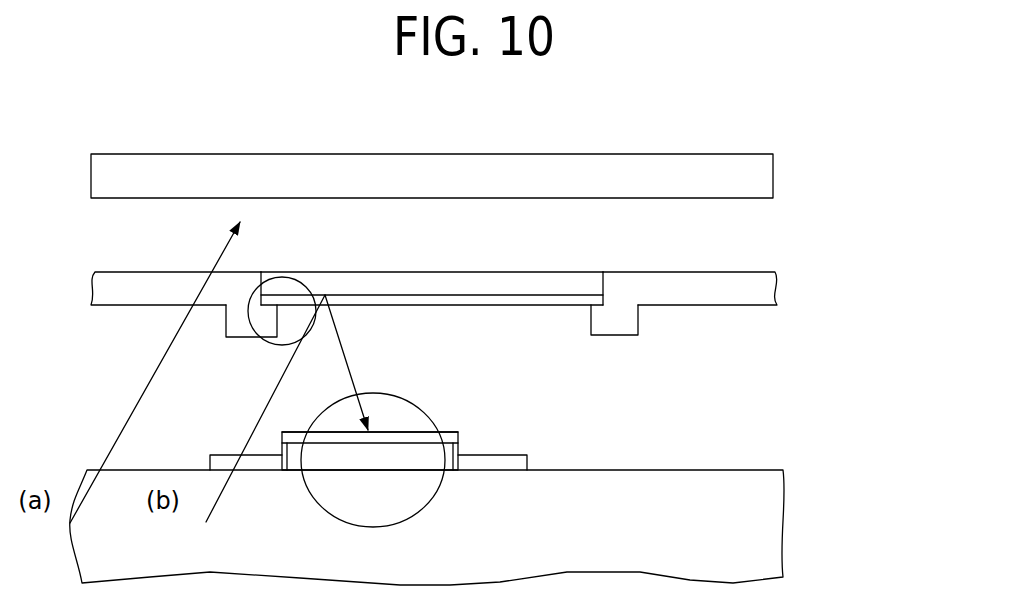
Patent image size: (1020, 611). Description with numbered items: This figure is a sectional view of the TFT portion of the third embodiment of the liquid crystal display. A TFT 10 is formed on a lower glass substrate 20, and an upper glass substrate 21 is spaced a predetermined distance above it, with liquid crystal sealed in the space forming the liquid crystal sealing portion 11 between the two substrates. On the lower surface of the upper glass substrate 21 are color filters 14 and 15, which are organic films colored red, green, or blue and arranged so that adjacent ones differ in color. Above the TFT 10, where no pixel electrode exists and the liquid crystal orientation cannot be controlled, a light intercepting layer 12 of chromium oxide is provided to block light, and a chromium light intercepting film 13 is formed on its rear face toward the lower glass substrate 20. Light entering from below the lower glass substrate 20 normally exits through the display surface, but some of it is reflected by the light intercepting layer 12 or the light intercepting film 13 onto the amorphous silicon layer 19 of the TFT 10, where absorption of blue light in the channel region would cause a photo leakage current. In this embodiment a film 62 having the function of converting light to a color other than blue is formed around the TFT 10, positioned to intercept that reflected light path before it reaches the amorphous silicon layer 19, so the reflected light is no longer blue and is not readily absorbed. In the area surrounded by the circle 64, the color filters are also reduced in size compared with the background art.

The TFT 10 is at (443, 453).
The liquid crystal sealing portion 11 is at (479, 307).
The light intercepting layer 12 is at (383, 270).
The light intercepting film 13 is at (453, 293).
The color filter 14 is at (248, 348).
The color filter 15 is at (612, 347).
The amorphous silicon layer 19 is at (452, 430).
The lower glass substrate 20 is at (755, 172).
The upper glass substrate 21 is at (752, 292).
The film 62 is at (222, 459).
The circle 64 is at (293, 280).